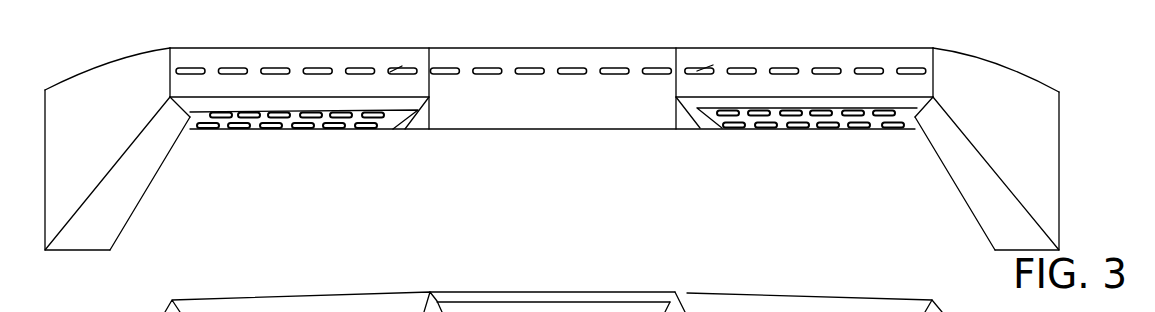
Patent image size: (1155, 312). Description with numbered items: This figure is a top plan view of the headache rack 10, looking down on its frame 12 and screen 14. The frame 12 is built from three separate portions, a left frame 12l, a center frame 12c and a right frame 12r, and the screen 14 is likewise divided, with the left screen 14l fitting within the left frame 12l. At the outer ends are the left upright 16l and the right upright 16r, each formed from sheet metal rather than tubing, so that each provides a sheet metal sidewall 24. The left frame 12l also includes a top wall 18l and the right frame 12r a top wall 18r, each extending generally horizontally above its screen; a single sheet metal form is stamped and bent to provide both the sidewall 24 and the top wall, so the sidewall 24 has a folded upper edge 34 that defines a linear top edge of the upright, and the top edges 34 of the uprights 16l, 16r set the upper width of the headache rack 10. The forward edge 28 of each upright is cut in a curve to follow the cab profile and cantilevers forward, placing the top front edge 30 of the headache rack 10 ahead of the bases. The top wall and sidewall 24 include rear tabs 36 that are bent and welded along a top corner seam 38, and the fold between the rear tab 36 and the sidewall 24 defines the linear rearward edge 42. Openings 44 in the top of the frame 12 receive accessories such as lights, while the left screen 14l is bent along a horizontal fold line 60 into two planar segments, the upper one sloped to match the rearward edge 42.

The headache rack 10 is at (1033, 62).
The frame 12 is at (487, 99).
The left frame 12l is at (297, 283).
The center frame 12c is at (510, 290).
The right frame 12r is at (848, 298).
The screen 14 is at (265, 146).
The left screen 14l is at (358, 311).
The left upright 16l is at (130, 182).
The right upright 16r is at (968, 175).
The top wall 18l is at (240, 87).
The top wall 18r is at (797, 82).
The sheet metal sidewall 24 is at (75, 108).
The forward edge 28 is at (985, 74).
The top front edge 30 is at (587, 48).
The folded upper edge 34 is at (323, 98).
The rear tab 36 is at (695, 300).
The top corner seam 38 is at (963, 311).
The rearward edge 42 is at (1002, 182).
The openings 44 is at (563, 68).
The horizontal fold line 60 is at (782, 311).